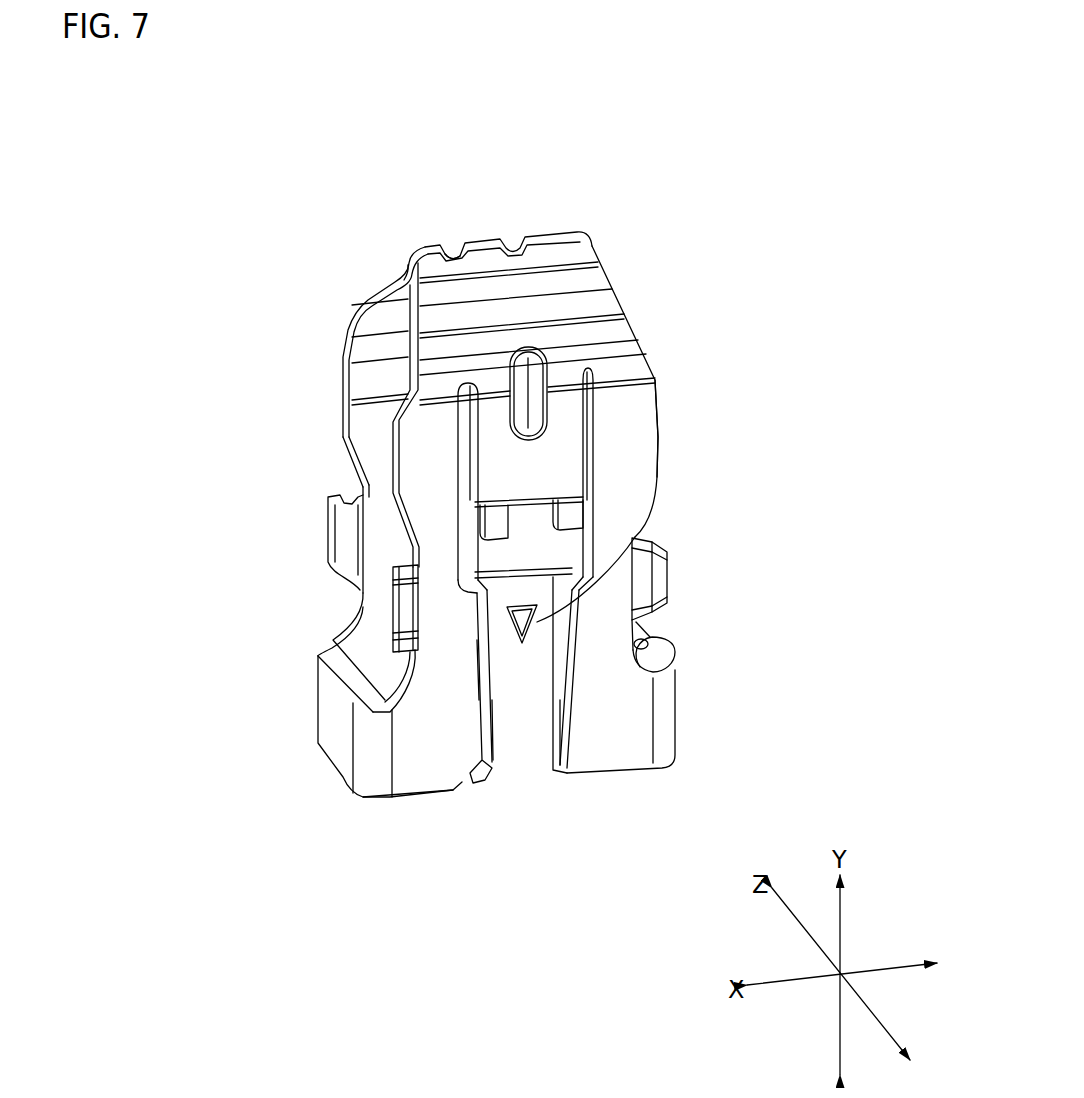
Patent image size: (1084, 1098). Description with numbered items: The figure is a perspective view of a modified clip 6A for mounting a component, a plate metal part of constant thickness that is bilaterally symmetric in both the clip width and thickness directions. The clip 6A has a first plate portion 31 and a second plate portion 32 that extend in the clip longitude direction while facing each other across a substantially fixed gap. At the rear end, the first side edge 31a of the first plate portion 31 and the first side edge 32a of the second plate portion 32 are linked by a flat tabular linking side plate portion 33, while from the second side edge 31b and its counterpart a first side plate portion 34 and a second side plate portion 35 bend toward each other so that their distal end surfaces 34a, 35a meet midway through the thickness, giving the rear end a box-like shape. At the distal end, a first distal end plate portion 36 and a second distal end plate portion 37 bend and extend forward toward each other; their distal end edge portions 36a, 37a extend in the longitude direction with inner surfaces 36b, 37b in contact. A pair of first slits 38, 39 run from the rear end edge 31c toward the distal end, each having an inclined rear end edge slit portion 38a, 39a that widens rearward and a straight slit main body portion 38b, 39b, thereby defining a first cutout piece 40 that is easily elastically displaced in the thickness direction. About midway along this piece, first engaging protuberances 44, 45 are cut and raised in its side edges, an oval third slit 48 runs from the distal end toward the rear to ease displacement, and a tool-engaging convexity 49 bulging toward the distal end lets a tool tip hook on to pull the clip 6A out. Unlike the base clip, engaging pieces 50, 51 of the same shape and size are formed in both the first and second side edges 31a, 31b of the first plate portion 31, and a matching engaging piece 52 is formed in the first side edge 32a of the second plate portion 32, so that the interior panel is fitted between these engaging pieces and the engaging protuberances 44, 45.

The clip 6A is at (258, 275).
The first plate portion 31 is at (613, 737).
The first side edge 31a is at (387, 463).
The second side edge 31b is at (658, 437).
The rear end edge 31c is at (430, 805).
The second plate portion 32 is at (370, 403).
The first side edge 32a is at (345, 437).
The linking side plate portion 33 is at (322, 743).
The first side plate portion 34 is at (690, 665).
The distal end surface 34a is at (640, 645).
The second side plate portion 35 is at (662, 633).
The distal end surface 35a is at (650, 642).
The first distal end plate portion 36 is at (580, 307).
The distal end edge portion 36a is at (570, 258).
The surface 36b is at (548, 233).
The second distal end plate portion 37 is at (350, 297).
The distal end edge portion 37a is at (407, 266).
The surface 37b is at (455, 262).
The first slit 38 is at (477, 698).
The rear end edge slit portion 38a is at (485, 782).
The slit main body portion 38b is at (478, 657).
The first slit 39 is at (580, 690).
The rear end edge slit portion 39a is at (578, 760).
The slit main body portion 39b is at (565, 637).
The first cutout piece 40 is at (522, 708).
The first engaging protuberance 44 is at (487, 522).
The first engaging protuberance 45 is at (575, 515).
The third slit 48 is at (532, 395).
The tool-engaging convexity 49 is at (632, 540).
The engaging piece 50 is at (407, 620).
The engaging piece 51 is at (660, 585).
The engaging piece 52 is at (328, 532).